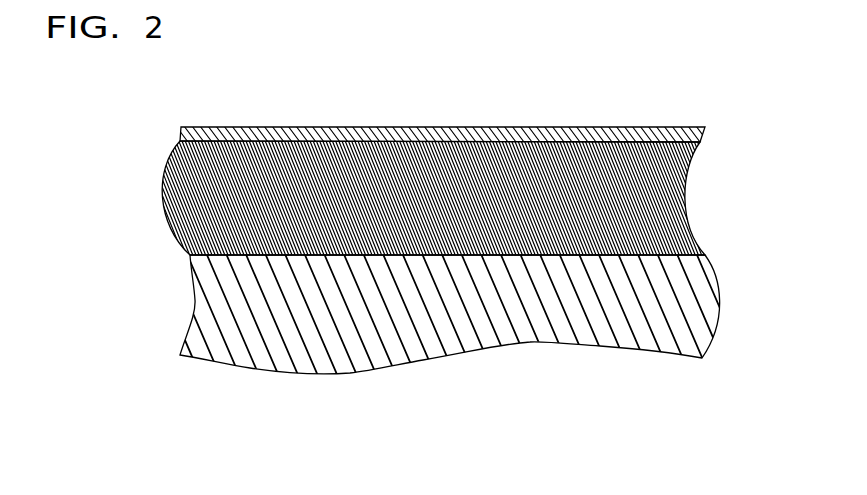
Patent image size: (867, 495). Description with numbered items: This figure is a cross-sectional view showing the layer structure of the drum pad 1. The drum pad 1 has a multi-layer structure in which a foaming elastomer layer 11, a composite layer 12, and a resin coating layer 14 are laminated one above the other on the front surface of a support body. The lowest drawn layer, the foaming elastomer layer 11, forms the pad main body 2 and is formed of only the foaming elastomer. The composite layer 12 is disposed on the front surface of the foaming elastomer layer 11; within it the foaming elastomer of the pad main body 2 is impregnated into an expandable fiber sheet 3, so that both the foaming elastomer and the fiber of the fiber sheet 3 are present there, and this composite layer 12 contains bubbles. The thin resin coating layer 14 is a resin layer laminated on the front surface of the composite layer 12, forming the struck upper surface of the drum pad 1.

The drum pad 1 is at (702, 97).
The pad main body 2 is at (209, 305).
The fiber sheet 3 is at (160, 197).
The foaming elastomer layer 11 is at (737, 257).
The composite layer 12 is at (737, 143).
The resin coating layer 14 is at (703, 135).